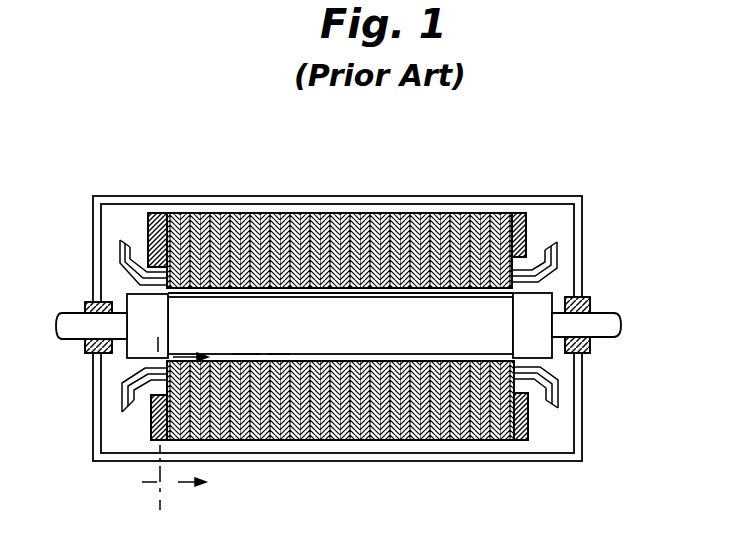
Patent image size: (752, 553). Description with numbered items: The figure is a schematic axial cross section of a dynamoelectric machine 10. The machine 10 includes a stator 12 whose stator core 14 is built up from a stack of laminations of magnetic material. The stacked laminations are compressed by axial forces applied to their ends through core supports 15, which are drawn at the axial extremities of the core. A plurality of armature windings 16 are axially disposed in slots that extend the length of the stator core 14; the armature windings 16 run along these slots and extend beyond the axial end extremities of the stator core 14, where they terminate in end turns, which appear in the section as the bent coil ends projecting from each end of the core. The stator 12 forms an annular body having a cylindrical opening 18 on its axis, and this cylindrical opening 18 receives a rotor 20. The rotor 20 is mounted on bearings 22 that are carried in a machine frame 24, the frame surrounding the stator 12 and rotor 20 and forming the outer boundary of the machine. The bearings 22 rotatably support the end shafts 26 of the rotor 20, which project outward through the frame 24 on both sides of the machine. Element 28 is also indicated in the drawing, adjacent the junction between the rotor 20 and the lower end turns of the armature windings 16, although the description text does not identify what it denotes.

The dynamoelectric machine 10 is at (340, 338).
The stator 12 is at (441, 213).
The stator core 14 is at (242, 214).
The core supports 15 is at (525, 233).
The armature windings 16 is at (121, 248).
The cylindrical opening 18 is at (497, 292).
The rotor 20 is at (497, 333).
The bearings 22 is at (90, 301).
The machine frame 24 is at (424, 461).
The end shafts 26 is at (605, 312).
The rotor end ring 28 is at (166, 369).